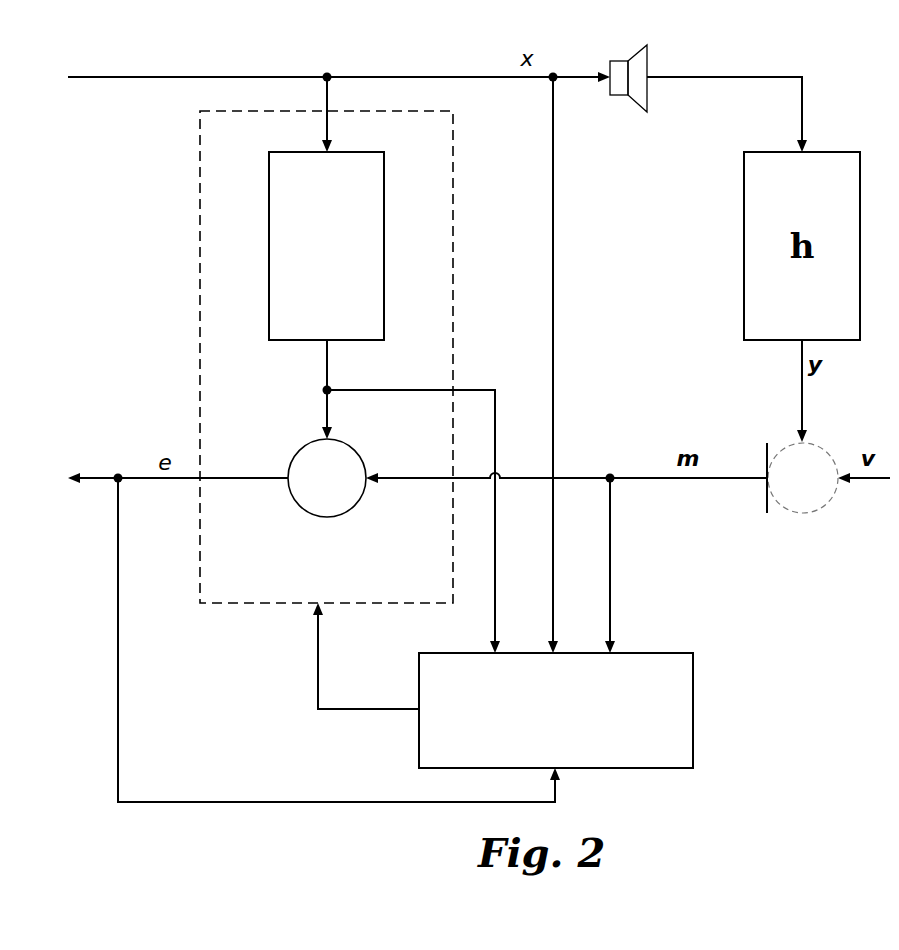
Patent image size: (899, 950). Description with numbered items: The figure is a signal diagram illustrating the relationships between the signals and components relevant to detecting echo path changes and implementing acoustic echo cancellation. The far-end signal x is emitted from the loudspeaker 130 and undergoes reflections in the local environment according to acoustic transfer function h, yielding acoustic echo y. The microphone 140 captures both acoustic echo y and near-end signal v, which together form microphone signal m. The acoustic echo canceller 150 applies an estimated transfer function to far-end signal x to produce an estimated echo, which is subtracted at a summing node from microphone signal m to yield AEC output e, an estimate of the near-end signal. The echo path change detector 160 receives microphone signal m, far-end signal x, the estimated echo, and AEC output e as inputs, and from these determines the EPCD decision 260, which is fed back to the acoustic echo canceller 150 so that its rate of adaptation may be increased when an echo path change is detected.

The loudspeaker 130 is at (633, 102).
The microphone 140 is at (800, 514).
The acoustic echo canceller 150 is at (453, 222).
The echo path change detector 160 is at (693, 713).
The EPCD decision 260 is at (327, 710).